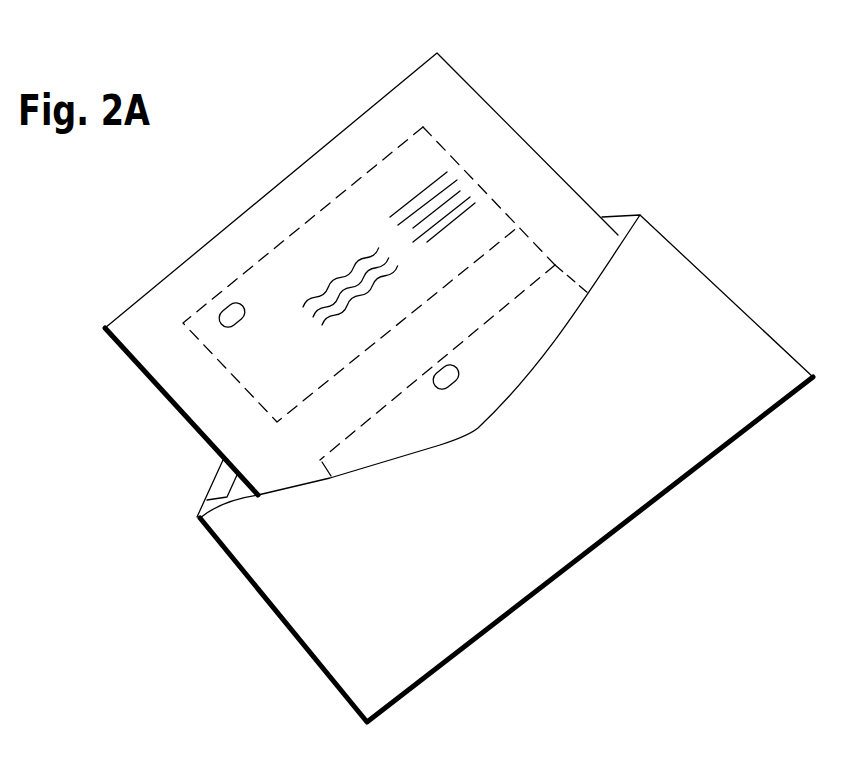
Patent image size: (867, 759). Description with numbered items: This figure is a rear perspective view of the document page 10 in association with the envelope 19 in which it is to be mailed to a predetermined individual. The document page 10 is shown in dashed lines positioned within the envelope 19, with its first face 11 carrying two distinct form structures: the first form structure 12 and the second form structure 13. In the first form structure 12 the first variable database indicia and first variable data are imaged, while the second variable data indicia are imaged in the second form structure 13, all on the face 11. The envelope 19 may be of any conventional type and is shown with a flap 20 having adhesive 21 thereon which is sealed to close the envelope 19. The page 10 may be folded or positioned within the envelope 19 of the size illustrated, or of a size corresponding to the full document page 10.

The document page 10 is at (505, 105).
The first face 11 is at (278, 203).
The first form structure 12 is at (192, 315).
The second form structure 13 is at (555, 262).
The envelope 19 is at (308, 672).
The flap 20 is at (195, 500).
The adhesive 21 is at (222, 482).